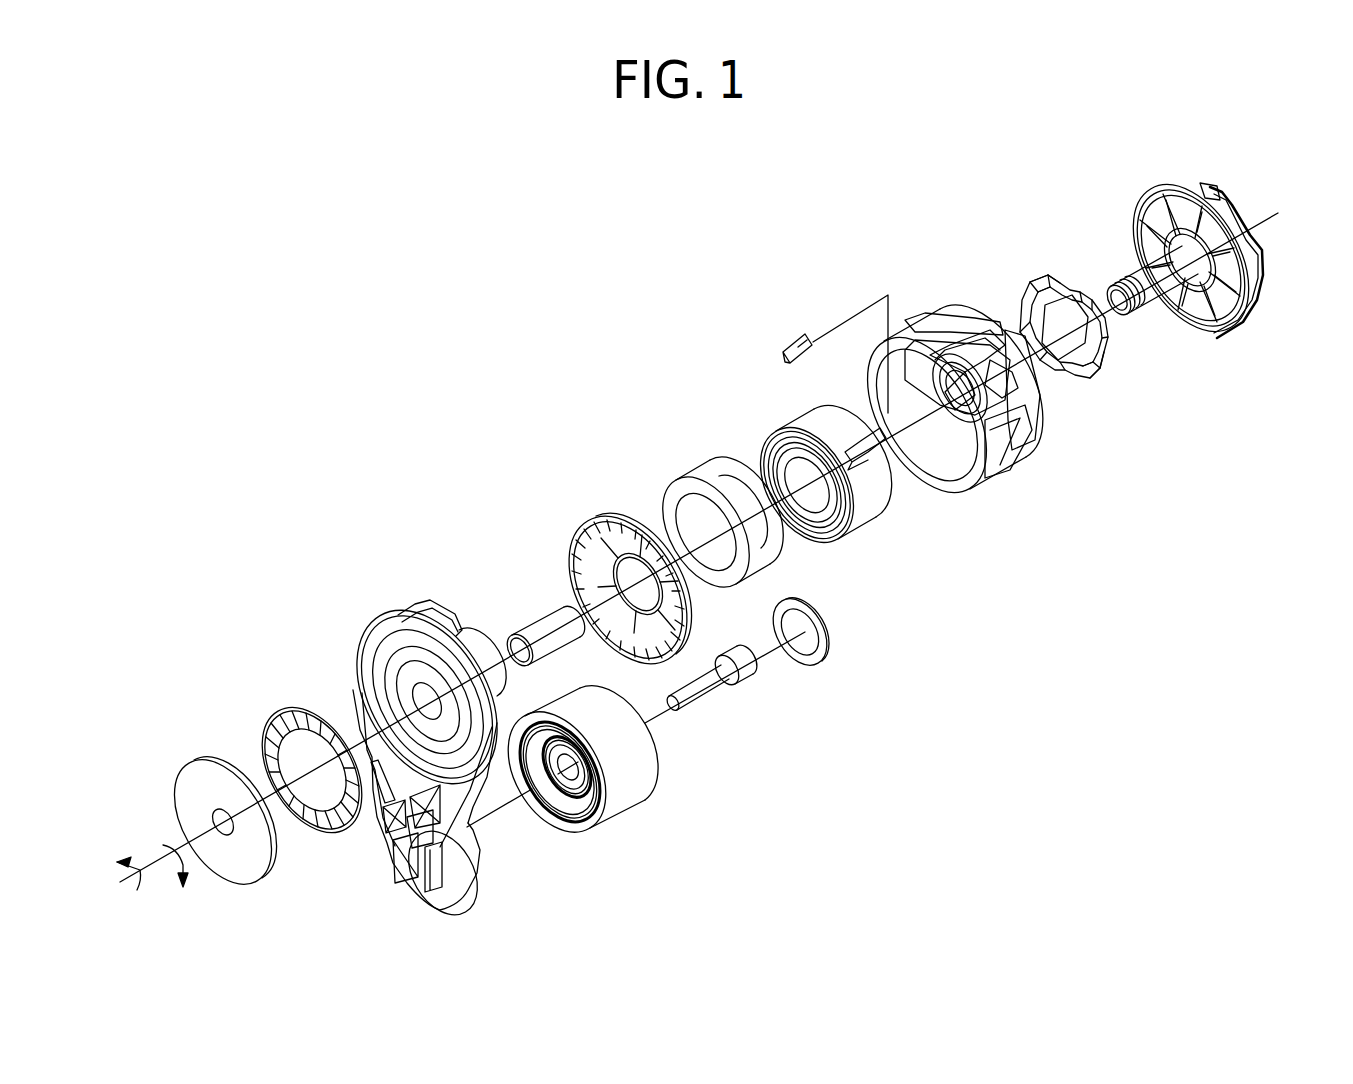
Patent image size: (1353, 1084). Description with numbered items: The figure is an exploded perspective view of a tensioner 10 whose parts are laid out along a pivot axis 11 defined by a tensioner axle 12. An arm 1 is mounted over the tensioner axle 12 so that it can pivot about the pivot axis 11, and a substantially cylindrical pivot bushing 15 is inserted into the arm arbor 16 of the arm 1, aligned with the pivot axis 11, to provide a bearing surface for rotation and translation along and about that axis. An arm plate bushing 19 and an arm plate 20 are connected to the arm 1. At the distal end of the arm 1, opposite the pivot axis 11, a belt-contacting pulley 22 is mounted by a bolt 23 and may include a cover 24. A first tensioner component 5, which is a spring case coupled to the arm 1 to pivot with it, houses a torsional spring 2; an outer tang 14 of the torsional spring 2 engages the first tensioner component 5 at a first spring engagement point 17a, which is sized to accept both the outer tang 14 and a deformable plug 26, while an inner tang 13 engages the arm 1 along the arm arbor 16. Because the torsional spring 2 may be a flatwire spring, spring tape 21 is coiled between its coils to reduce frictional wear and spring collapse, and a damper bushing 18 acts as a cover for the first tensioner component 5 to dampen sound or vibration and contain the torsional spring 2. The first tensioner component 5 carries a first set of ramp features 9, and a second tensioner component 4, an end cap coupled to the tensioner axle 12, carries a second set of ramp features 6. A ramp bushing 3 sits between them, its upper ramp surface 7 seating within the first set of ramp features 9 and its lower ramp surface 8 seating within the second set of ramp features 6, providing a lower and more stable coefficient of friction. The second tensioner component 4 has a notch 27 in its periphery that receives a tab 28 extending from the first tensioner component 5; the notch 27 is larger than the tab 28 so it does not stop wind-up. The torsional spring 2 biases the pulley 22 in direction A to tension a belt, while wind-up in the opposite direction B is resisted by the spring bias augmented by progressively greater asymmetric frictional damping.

The arm 1 is at (380, 870).
The torsional spring 2 is at (855, 545).
The ramp bushing 3 is at (1090, 395).
The second tensioner component 4 is at (1190, 335).
The first tensioner component 5 is at (993, 470).
The second set of ramp features 6 is at (1177, 213).
The upper ramp surface 7 is at (1100, 378).
The lower ramp surface 8 is at (1047, 290).
The first set of ramp features 9 is at (950, 340).
The tensioner 10 is at (500, 450).
The pivot axis 11 is at (165, 858).
The tensioner axle 12 is at (1135, 280).
The inner tang 13 is at (792, 535).
The outer tang 14 is at (882, 455).
The pivot bushing 15 is at (536, 623).
The arm arbor 16 is at (470, 645).
The first spring engagement point 17a is at (975, 340).
The damper bushing 18 is at (600, 512).
The arm plate bushing 19 is at (286, 703).
The arm plate 20 is at (187, 775).
The spring tape 21 is at (713, 470).
The pulley 22 is at (605, 820).
The bolt 23 is at (707, 698).
The cover 24 is at (810, 670).
The plug 26 is at (797, 332).
The notch 27 is at (1228, 222).
The tab 28 is at (1015, 378).
The direction A is at (129, 887).
The direction B is at (167, 857).